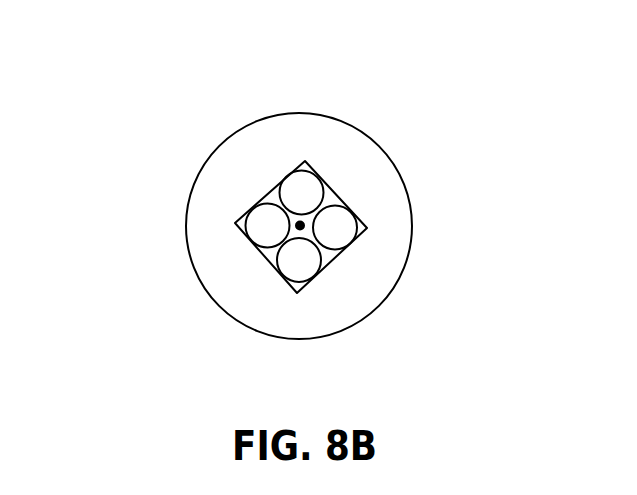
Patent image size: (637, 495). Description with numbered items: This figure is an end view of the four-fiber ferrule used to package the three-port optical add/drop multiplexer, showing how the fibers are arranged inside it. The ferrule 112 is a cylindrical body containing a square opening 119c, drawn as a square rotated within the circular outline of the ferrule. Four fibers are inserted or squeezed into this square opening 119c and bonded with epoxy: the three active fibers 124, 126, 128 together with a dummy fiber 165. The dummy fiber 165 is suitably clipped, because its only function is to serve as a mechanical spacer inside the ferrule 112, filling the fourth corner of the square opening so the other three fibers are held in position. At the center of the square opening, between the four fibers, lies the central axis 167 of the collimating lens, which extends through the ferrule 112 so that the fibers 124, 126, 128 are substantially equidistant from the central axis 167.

The ferrule 112 is at (343, 194).
The square opening 119c is at (205, 207).
The fiber 126 is at (257, 132).
The fiber 128 is at (426, 197).
The dummy fiber 165 is at (171, 250).
The fiber 124 is at (216, 308).
The central axis 167 is at (370, 305).